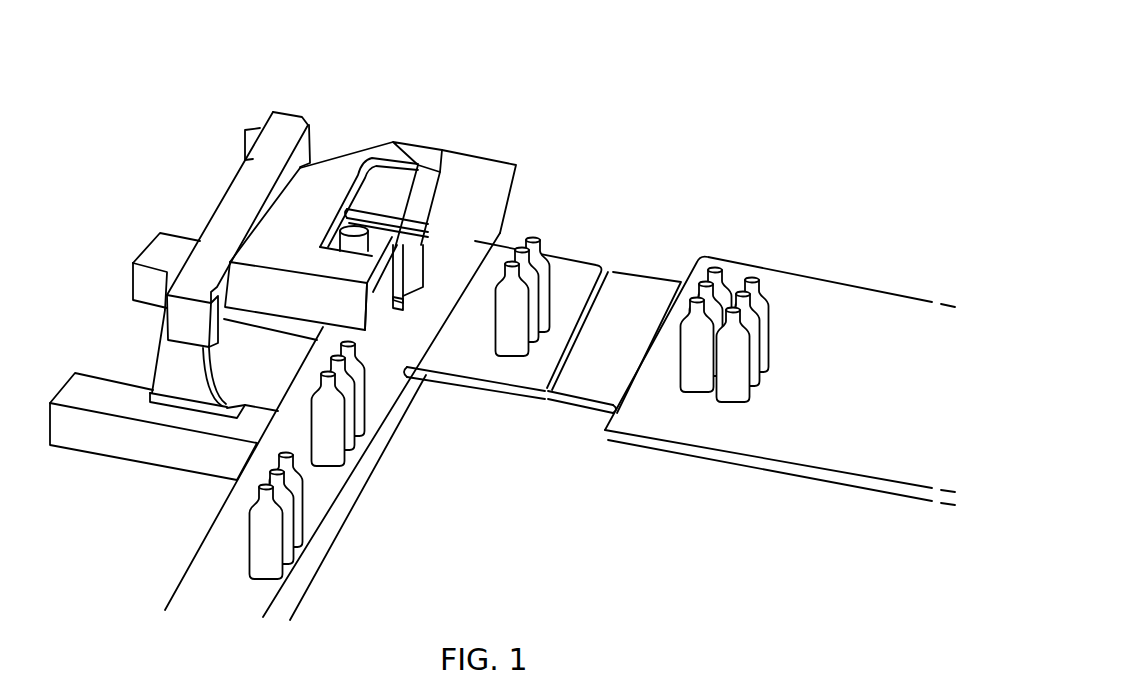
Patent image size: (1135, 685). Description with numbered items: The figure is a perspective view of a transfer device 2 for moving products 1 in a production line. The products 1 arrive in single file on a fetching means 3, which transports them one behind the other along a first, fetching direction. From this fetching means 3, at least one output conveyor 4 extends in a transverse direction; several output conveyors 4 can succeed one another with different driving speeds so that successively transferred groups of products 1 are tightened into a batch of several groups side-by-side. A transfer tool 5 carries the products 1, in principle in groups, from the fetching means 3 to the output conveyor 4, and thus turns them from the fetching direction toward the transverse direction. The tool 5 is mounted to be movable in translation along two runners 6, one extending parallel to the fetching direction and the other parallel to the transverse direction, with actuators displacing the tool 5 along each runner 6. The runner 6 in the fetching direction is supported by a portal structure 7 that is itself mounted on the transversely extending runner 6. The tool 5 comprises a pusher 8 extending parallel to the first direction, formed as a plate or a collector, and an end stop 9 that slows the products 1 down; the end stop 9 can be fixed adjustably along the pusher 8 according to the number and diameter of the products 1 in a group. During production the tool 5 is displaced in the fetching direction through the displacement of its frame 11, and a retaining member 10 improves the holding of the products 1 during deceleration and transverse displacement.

The products 1 is at (275, 557).
The transfer device 2 is at (241, 98).
The fetching means 3 is at (473, 178).
The output conveyor 4 is at (582, 277).
The transfer tool 5 is at (195, 223).
The runners 6 is at (243, 190).
The portal structure 7 is at (173, 358).
The pusher 8 is at (374, 314).
The end stop 9 is at (400, 302).
The retaining member 10 is at (432, 254).
The frame 11 is at (413, 152).